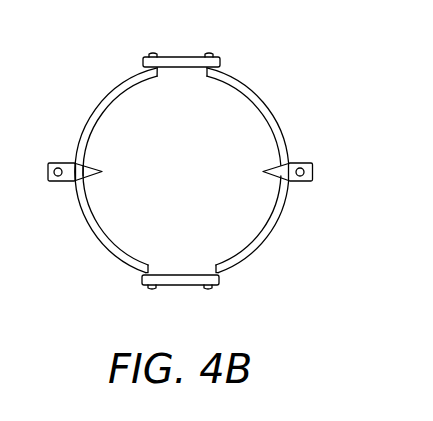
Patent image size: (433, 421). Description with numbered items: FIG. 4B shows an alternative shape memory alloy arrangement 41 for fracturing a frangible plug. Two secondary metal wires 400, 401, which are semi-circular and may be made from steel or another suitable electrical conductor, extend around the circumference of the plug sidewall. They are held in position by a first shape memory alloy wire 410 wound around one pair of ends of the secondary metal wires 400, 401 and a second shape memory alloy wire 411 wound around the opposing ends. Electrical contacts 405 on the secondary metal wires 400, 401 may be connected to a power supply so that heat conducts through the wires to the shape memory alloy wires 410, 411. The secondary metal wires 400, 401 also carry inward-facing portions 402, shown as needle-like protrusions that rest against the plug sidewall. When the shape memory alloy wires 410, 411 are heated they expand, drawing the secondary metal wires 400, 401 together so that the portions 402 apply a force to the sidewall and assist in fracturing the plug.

The clamp assembly 41 is at (76, 89).
The secondary metal wire 400 is at (272, 233).
The secondary metal wire 401 is at (93, 238).
The portions 402 is at (262, 169).
The electrical contacts 405 is at (301, 166).
The first shape memory alloy wire 410 is at (178, 57).
The second shape memory alloy wire 411 is at (178, 285).